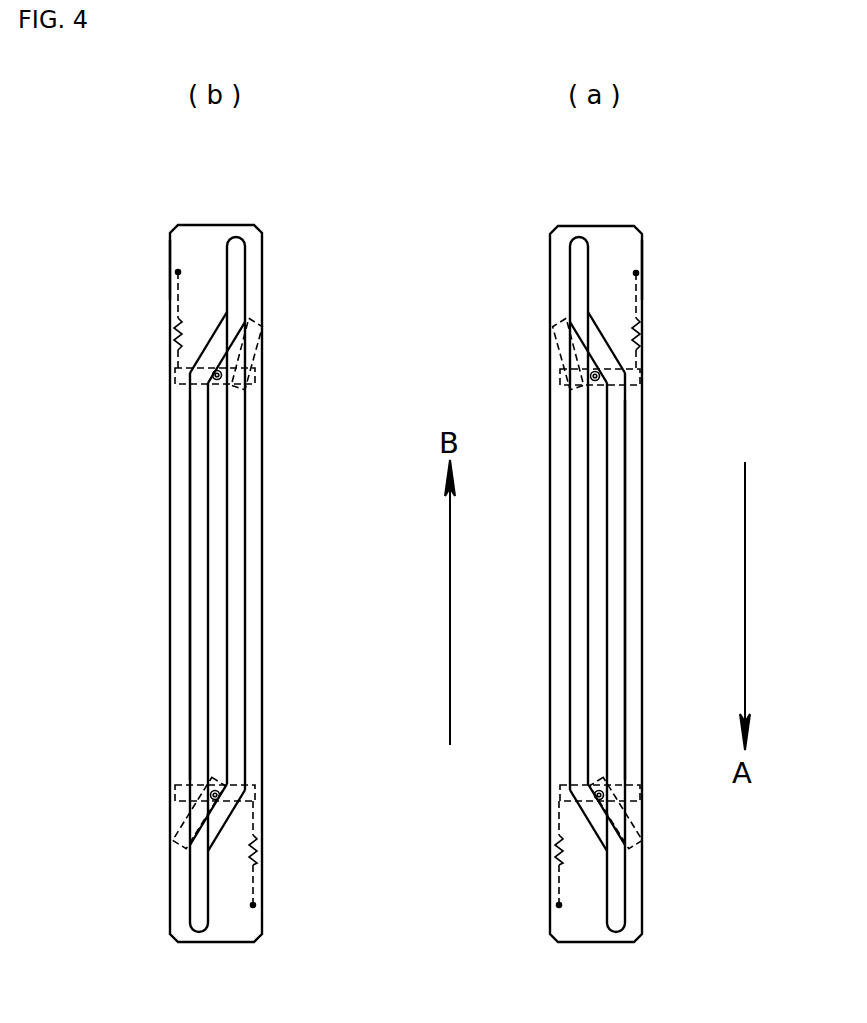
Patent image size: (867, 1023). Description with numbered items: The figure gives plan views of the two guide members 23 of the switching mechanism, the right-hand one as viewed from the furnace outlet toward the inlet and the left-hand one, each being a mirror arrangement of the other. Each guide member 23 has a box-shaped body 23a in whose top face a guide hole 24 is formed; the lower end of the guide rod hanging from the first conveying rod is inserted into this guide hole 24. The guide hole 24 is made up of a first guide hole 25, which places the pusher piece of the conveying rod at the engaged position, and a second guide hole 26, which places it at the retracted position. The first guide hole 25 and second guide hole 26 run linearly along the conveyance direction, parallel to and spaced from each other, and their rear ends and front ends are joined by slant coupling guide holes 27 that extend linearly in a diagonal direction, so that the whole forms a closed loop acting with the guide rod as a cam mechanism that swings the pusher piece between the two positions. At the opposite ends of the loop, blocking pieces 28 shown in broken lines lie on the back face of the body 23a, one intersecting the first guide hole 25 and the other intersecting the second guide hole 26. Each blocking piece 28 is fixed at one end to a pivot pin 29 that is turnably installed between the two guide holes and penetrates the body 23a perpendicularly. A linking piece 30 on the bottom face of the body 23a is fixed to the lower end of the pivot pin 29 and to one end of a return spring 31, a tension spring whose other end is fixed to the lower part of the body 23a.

The guide member 23 is at (268, 271).
The body 23a is at (170, 252).
The guide hole 24 is at (175, 506).
The first guide hole 25 is at (197, 603).
The second guide hole 26 is at (232, 599).
The coupling guide hole 27 is at (197, 362).
The blocking piece 28 is at (258, 337).
The pivot pin 29 is at (228, 382).
The linking piece 30 is at (172, 385).
The return spring 31 is at (166, 323).